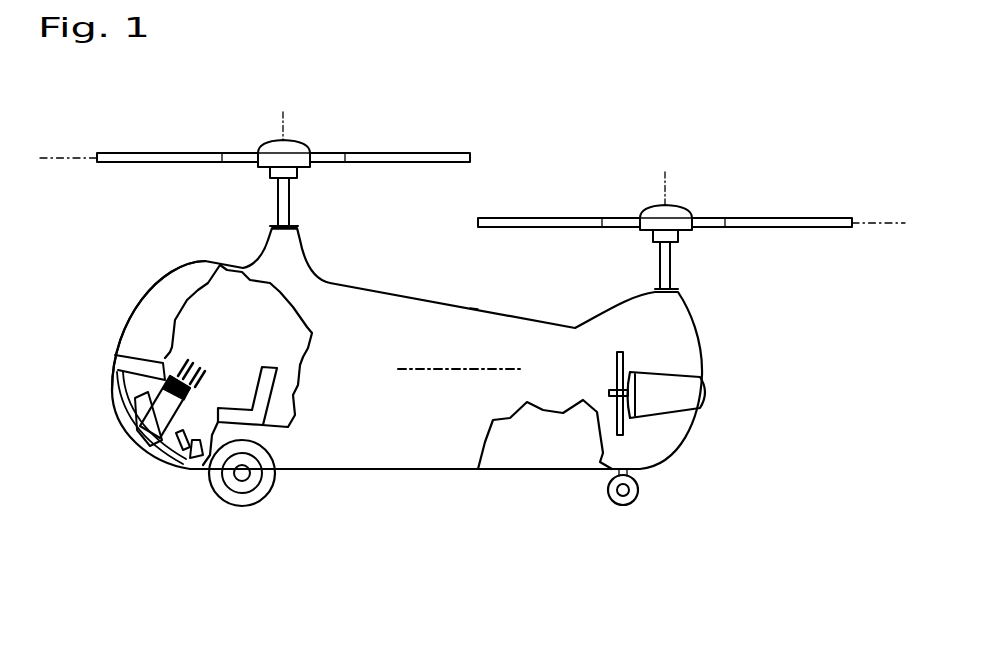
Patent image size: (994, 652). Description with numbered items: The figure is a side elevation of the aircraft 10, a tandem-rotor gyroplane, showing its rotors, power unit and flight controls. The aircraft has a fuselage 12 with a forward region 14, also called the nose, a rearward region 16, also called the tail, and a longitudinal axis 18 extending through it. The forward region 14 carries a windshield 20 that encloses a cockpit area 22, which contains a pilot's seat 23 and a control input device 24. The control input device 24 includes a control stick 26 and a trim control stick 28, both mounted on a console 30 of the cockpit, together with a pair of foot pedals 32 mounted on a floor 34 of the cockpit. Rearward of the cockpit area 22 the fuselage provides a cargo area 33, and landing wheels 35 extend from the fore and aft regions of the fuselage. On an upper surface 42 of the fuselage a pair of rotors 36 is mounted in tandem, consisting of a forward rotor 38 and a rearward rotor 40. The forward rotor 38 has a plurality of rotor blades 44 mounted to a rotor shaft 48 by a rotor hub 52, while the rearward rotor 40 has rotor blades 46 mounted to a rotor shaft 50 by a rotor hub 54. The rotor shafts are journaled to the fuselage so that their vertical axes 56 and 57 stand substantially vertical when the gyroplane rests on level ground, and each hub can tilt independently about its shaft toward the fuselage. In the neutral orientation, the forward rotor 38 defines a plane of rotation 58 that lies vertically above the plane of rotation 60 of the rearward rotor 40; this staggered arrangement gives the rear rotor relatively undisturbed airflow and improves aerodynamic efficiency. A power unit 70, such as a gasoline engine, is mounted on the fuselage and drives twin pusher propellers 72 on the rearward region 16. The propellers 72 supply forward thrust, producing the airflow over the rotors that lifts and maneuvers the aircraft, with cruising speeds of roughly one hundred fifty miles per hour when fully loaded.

The aircraft 10 is at (843, 318).
The fuselage 12 is at (430, 290).
The forward region 14 is at (118, 312).
The rearward region 16 is at (700, 318).
The longitudinal axis 18 is at (440, 375).
The windshield 20 is at (148, 300).
The cockpit area 22 is at (287, 334).
The pilot's seat 23 is at (270, 392).
The control input device 24 is at (200, 350).
The control stick 26 is at (232, 356).
The trim control stick 28 is at (165, 368).
The console 30 is at (162, 402).
The foot pedals 32 is at (185, 455).
The cargo area 33 is at (515, 456).
The floor 34 is at (197, 455).
The landing wheels 35 is at (240, 508).
The pair of rotors 36 is at (578, 160).
The forward rotor 38 is at (396, 124).
The rearward rotor 40 is at (730, 197).
The upper surface 42 is at (482, 312).
The rotor blades 44 is at (328, 154).
The rotor blades 46 is at (814, 219).
The rotor shaft 48 is at (292, 196).
The rotor shaft 50 is at (672, 262).
The rotor hub 52 is at (266, 172).
The rotor hub 54 is at (651, 238).
The vertical axis 56 is at (283, 115).
The vertical axis 57 is at (665, 175).
The plane of rotation 58 is at (72, 156).
The plane of rotation 60 is at (880, 222).
The power unit 70 is at (700, 395).
The pusher propellers 72 is at (636, 362).